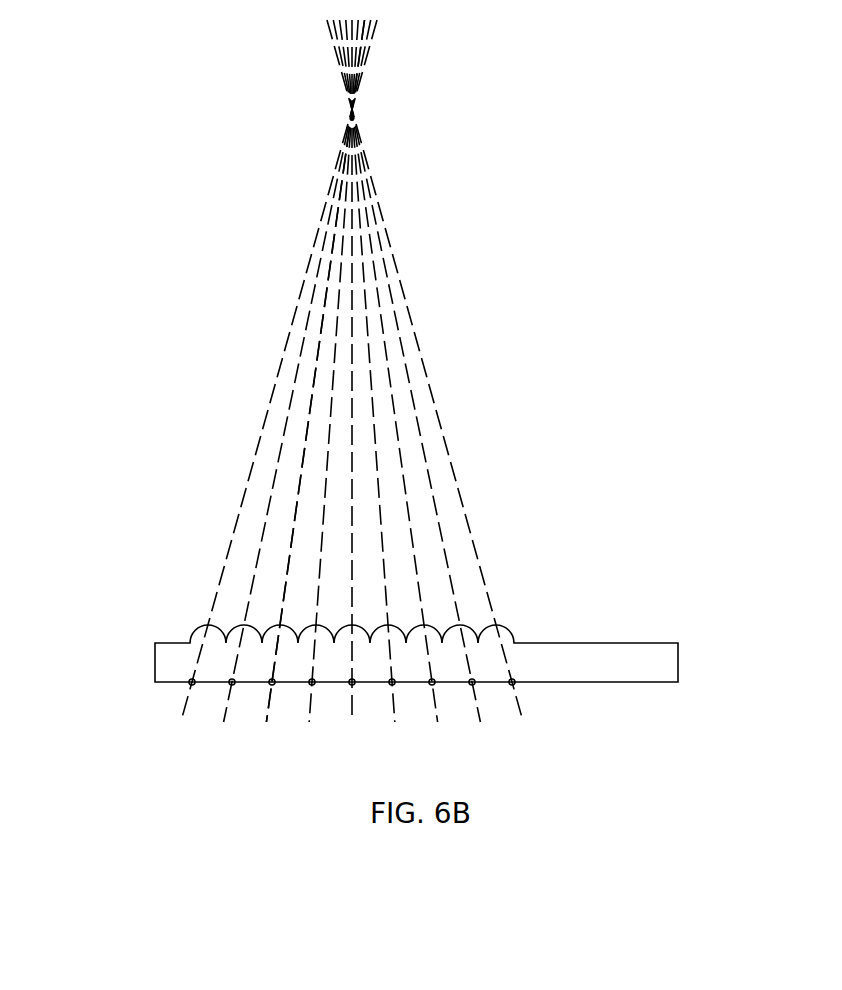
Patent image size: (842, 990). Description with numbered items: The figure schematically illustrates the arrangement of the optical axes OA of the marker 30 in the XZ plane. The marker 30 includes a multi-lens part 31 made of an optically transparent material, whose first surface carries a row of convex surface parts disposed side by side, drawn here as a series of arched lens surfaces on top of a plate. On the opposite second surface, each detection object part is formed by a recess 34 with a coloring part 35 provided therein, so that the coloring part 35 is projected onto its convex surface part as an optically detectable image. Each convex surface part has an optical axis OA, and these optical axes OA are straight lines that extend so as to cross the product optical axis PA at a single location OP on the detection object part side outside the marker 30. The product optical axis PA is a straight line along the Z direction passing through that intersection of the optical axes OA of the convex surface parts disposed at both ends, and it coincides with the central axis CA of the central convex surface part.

The marker 30 is at (414, 644).
The multi-lens part 31 is at (680, 662).
The recess 34 is at (192, 685).
The coloring part 35 is at (283, 715).
The intersection of optical axes OP is at (380, 90).
The optical axis OA is at (273, 392).
The product optical axis PA is at (352, 404).